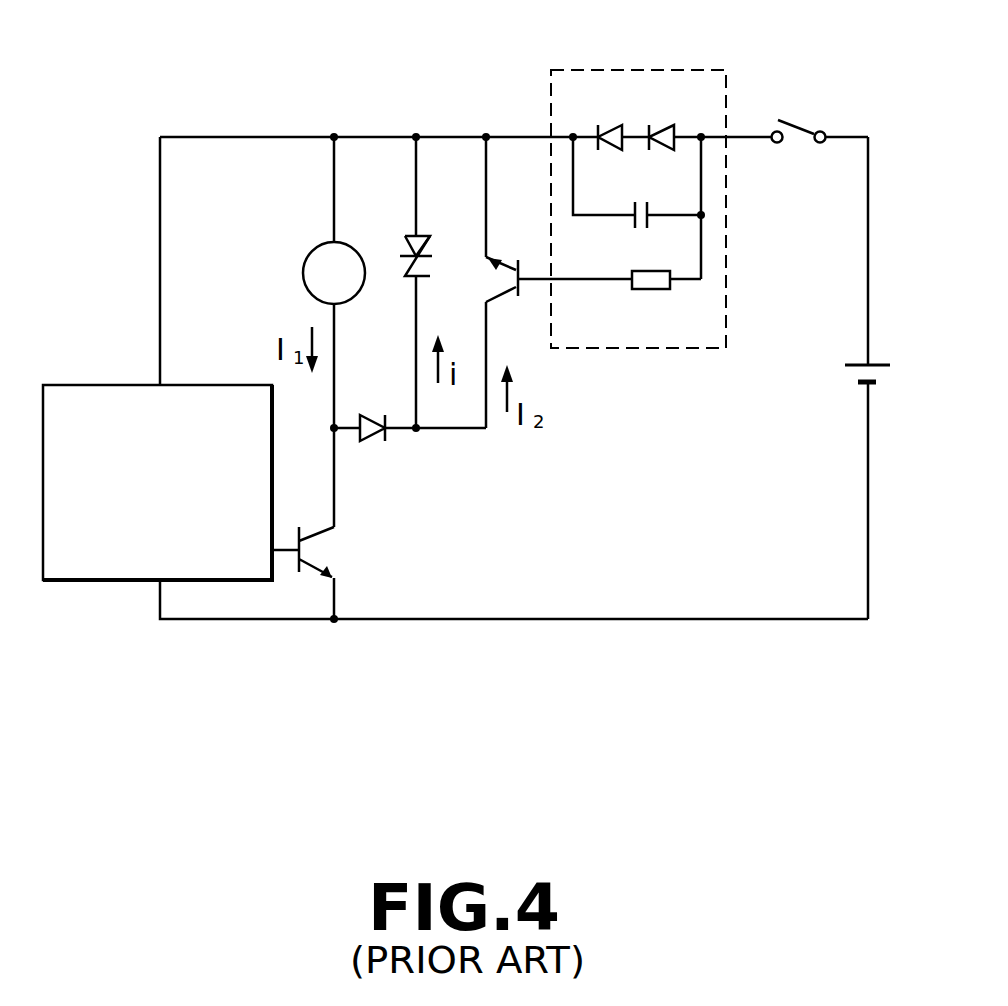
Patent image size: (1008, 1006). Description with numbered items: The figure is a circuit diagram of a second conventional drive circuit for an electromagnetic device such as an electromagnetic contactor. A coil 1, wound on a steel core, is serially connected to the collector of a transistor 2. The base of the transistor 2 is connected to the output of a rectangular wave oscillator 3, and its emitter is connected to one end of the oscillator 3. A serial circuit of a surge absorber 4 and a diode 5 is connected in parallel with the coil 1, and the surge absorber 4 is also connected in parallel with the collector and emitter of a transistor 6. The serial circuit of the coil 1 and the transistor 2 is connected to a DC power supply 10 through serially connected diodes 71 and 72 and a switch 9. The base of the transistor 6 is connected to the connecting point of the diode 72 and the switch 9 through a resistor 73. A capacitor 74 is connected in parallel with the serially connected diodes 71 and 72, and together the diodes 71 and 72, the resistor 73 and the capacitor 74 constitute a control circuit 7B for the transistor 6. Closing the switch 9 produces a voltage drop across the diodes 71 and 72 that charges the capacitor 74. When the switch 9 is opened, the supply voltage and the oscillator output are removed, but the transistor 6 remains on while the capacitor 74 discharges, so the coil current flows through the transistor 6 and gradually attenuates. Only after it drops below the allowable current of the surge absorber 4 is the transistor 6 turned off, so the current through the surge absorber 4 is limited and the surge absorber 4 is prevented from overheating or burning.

The coil 1 is at (313, 255).
The transistor 2 is at (320, 549).
The rectangular wave oscillator 3 is at (120, 385).
The surge absorber 4 is at (406, 253).
The diode 5 is at (376, 438).
The transistor 6 is at (494, 284).
The control circuit 7B is at (620, 70).
The diode 71 is at (612, 126).
The diode 72 is at (660, 126).
The resistor 73 is at (648, 291).
The capacitor 74 is at (640, 201).
The switch 9 is at (793, 146).
The DC power supply 10 is at (876, 361).